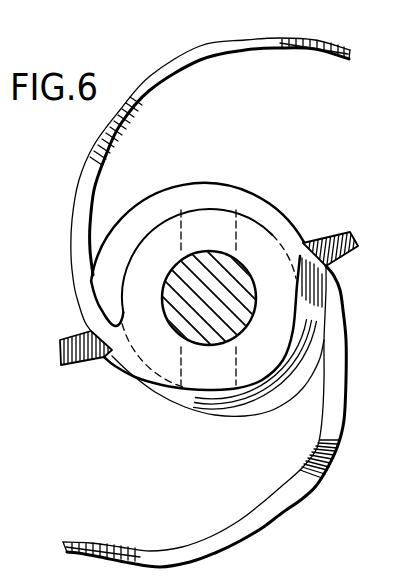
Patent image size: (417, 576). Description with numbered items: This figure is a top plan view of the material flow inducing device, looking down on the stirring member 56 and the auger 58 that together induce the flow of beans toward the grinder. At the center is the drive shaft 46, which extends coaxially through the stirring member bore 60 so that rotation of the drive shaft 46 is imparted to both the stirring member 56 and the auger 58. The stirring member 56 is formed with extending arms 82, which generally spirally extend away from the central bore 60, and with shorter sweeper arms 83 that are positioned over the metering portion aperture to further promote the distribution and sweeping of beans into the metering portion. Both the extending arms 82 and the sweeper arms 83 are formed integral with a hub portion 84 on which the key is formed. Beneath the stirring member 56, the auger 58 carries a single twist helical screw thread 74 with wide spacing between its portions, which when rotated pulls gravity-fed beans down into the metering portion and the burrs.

The extending arms 82 is at (197, 59).
The sweeper arms 83 is at (66, 370).
The auger member 58 is at (143, 200).
The stirring member 56 is at (168, 207).
The single twist helical screw thread 74 is at (222, 192).
The hub portion 84 is at (272, 200).
The stirring member bore 60 is at (170, 298).
The drive shaft 46 is at (251, 352).